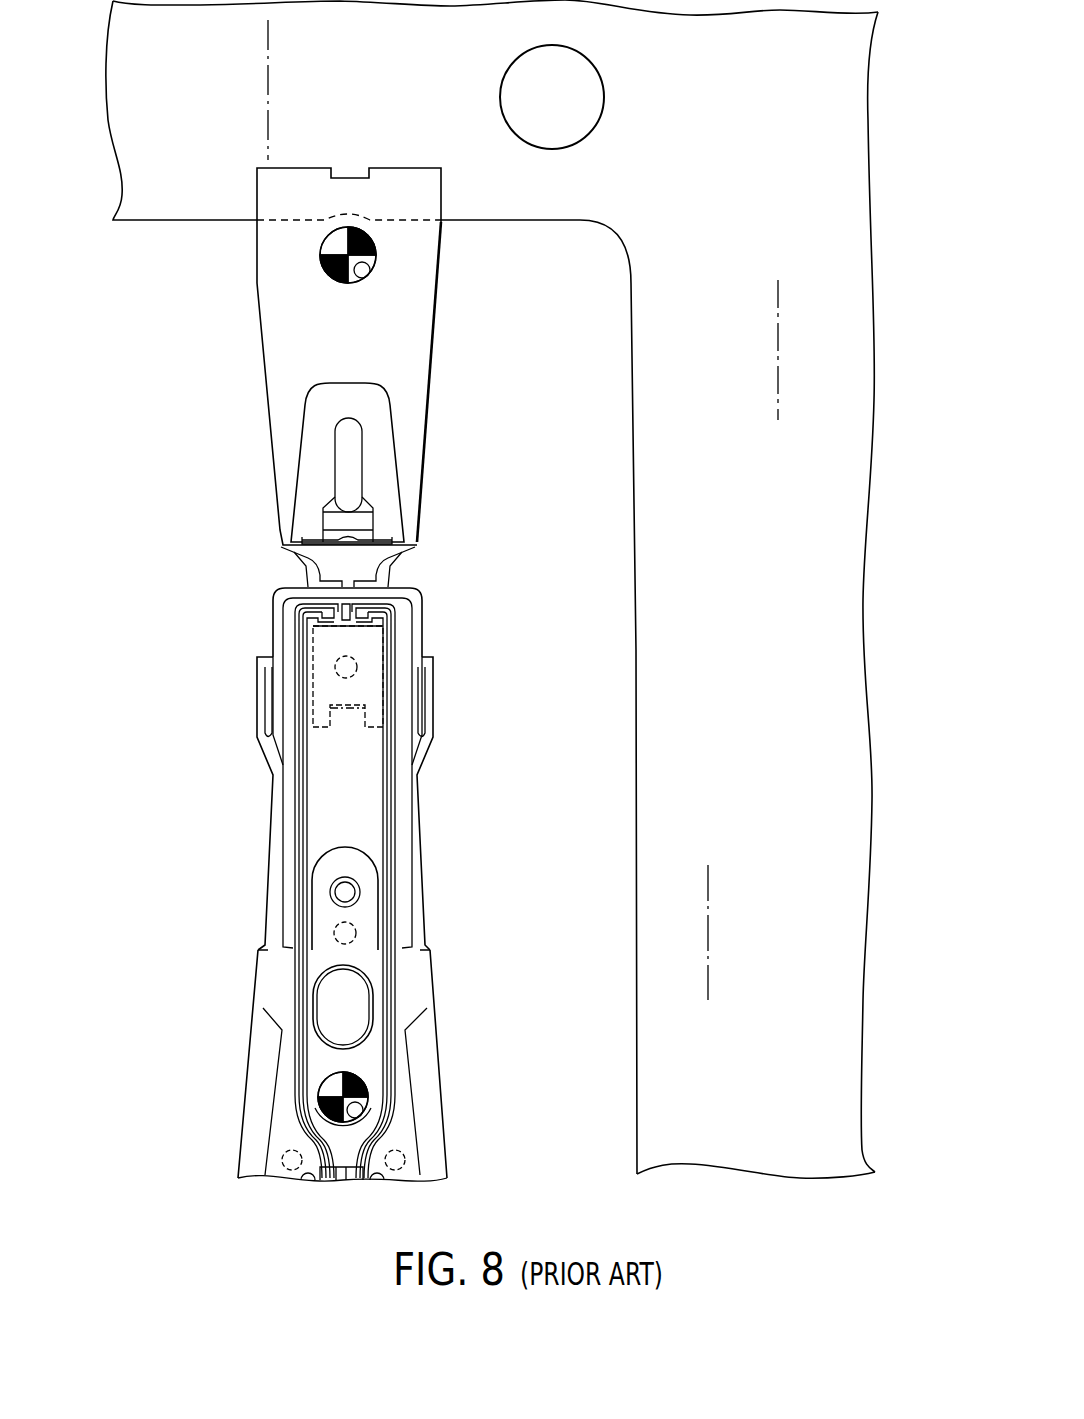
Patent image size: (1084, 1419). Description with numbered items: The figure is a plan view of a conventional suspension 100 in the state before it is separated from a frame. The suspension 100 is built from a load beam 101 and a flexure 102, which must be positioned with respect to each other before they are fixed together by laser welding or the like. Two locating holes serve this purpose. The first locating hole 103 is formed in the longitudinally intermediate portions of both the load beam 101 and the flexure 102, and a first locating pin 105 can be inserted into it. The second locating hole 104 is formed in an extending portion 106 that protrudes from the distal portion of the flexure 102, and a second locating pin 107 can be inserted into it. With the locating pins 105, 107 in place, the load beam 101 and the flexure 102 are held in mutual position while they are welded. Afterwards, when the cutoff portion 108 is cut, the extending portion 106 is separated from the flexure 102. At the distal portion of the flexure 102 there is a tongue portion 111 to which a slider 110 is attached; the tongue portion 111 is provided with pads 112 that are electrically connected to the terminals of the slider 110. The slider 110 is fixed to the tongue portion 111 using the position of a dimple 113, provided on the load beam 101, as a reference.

The suspension 100 is at (247, 812).
The load beam 101 is at (248, 1072).
The flexure 102 is at (267, 993).
The first locating hole 103 is at (362, 1105).
The second locating hole 104 is at (376, 265).
The first locating pin 105 is at (368, 1080).
The extending portion 106 is at (385, 360).
The second locating pin 107 is at (376, 248).
The cutoff portion 108 is at (278, 522).
The slider 110 is at (413, 642).
The tongue portion 111 is at (360, 687).
The pads 112 is at (387, 618).
The dimple 113 is at (332, 665).